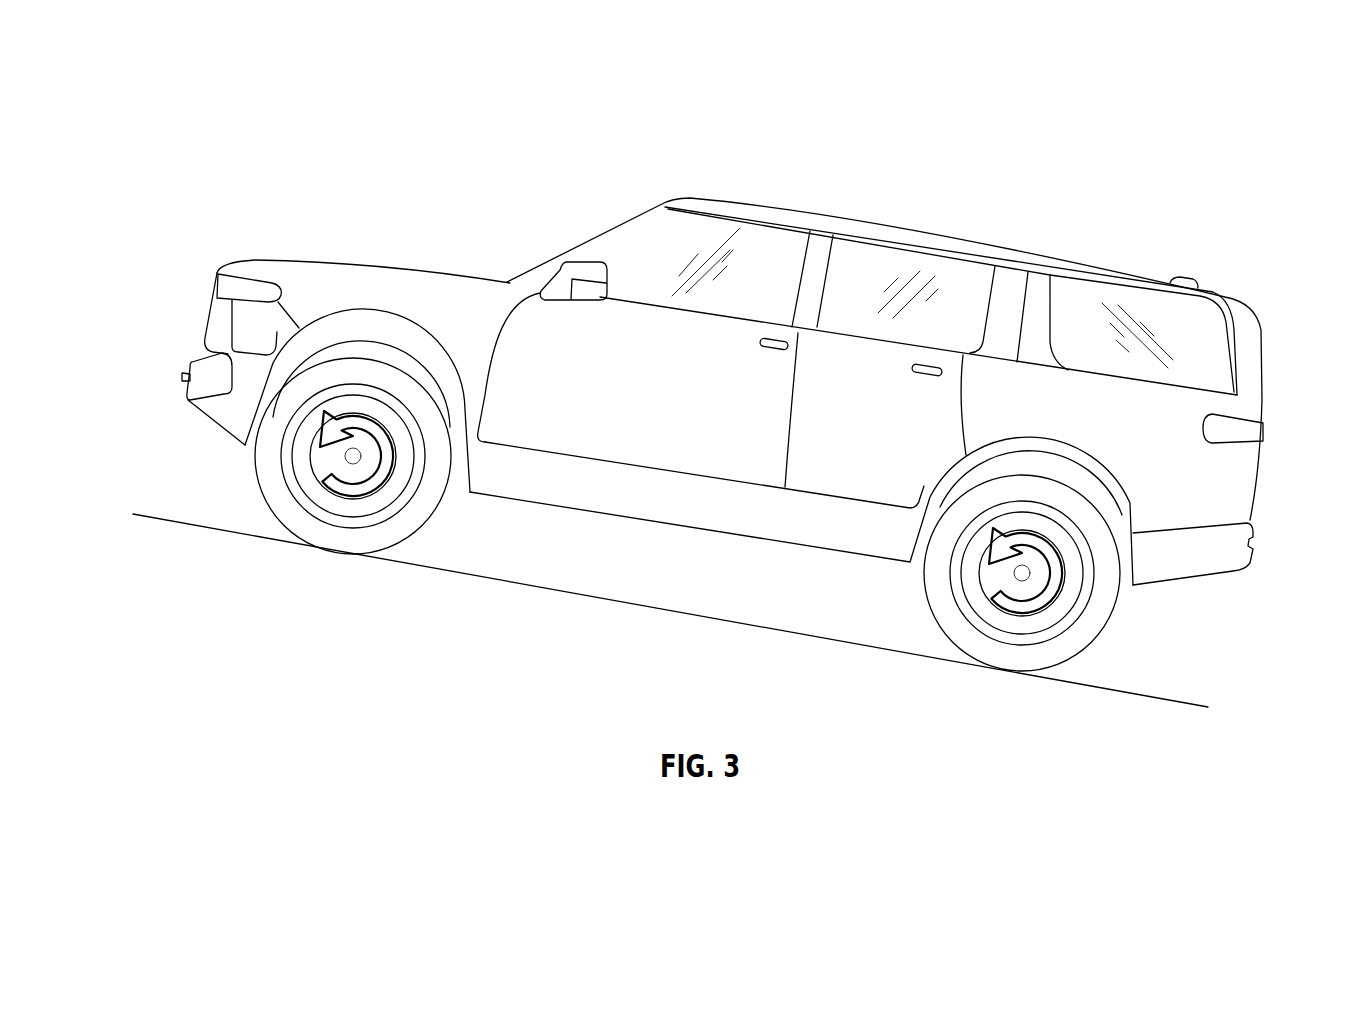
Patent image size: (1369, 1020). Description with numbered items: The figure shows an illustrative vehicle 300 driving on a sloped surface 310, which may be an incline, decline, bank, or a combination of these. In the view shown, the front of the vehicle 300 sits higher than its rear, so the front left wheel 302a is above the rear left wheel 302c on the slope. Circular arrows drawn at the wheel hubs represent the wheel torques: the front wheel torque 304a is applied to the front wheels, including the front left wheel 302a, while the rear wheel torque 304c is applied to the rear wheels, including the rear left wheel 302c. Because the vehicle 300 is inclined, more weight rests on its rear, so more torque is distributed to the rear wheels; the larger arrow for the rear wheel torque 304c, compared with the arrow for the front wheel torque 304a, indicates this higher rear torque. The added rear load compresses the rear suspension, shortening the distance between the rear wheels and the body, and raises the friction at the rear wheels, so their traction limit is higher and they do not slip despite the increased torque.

The vehicle 300 is at (393, 118).
The front left wheel 302a is at (380, 354).
The front wheel torque 304a is at (403, 450).
The rear left wheel 302c is at (1033, 473).
The rear wheel torque 304c is at (975, 533).
The sloped surface 310 is at (557, 593).